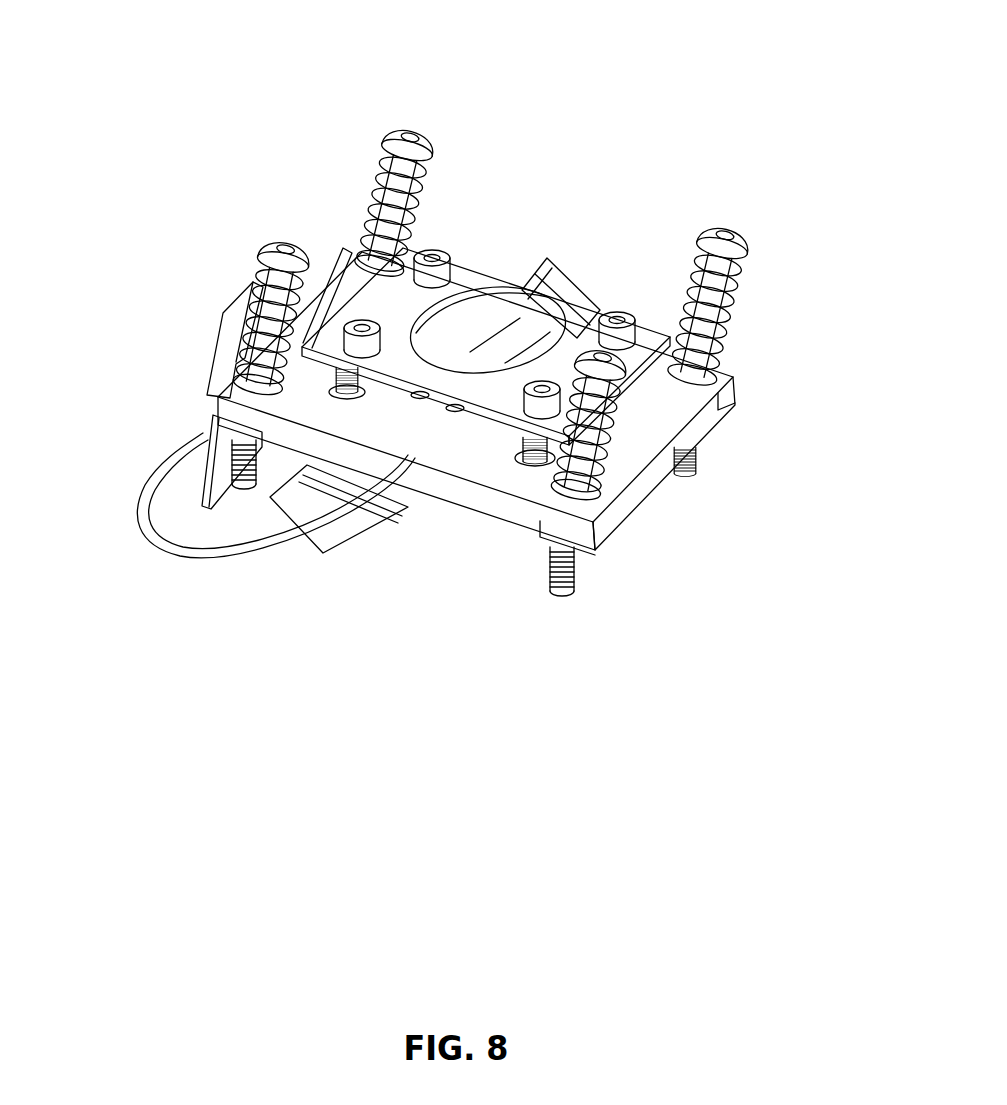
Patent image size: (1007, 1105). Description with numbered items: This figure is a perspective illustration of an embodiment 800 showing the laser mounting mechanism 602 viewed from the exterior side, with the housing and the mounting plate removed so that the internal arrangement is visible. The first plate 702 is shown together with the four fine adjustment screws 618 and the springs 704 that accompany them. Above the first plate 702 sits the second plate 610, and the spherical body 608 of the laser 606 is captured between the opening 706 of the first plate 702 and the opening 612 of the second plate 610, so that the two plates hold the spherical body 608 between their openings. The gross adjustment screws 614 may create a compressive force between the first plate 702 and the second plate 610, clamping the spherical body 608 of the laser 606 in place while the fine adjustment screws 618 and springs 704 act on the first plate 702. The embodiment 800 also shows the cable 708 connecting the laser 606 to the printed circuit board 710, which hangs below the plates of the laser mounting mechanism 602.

The laser mounting mechanism 602 is at (518, 535).
The laser 606 is at (567, 297).
The spherical body 608 is at (478, 302).
The second plate 610 is at (373, 300).
The opening 612 is at (415, 398).
The gross adjustment screws 614 is at (437, 250).
The fine adjustment screws 618 is at (730, 237).
The first plate 702 is at (640, 448).
The springs 704 is at (737, 337).
The opening 706 is at (450, 412).
The cable 708 is at (175, 550).
The printed circuit board 710 is at (213, 433).
The embodiment 800 is at (352, 734).